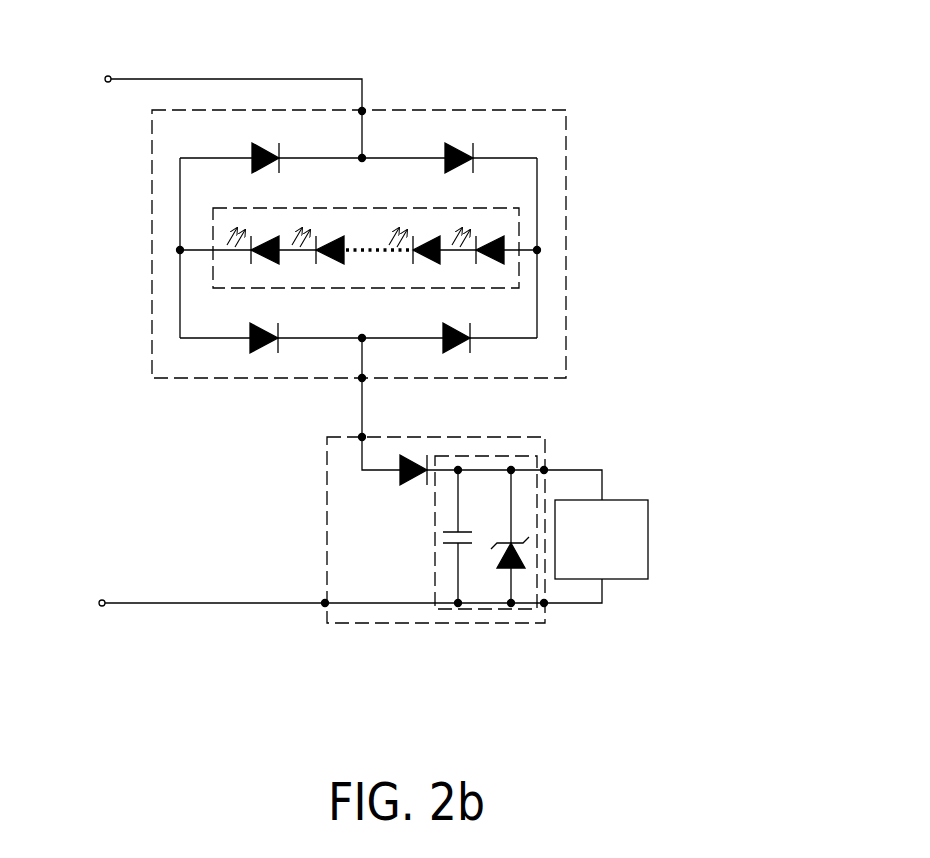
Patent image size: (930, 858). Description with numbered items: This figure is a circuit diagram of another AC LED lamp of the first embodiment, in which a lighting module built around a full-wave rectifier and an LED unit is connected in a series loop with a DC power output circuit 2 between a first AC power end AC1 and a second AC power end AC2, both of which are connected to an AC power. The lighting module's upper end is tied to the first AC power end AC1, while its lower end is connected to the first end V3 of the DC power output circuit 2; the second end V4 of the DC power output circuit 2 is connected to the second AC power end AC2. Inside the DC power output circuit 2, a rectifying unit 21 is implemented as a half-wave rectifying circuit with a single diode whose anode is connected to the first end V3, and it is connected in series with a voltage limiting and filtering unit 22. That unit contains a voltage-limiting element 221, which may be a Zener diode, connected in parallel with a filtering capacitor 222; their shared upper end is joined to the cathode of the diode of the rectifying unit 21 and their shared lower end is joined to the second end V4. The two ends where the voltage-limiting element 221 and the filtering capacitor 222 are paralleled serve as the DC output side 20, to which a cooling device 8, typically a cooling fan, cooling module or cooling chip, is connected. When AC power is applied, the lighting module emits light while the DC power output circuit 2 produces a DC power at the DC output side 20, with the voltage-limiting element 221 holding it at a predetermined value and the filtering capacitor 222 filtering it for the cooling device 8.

The DC power output circuit 2 is at (472, 623).
The DC output side 20 is at (544, 470).
The rectifying unit 21 is at (400, 477).
The voltage limiting and filtering unit 22 is at (435, 518).
The voltage-limiting element 221 is at (522, 563).
The filtering capacitor 222 is at (445, 547).
The cooling device 8 is at (622, 505).
The first AC power end AC1 is at (220, 75).
The second AC power end AC2 is at (313, 580).
The first end V3 is at (362, 437).
The second end V4 is at (325, 603).